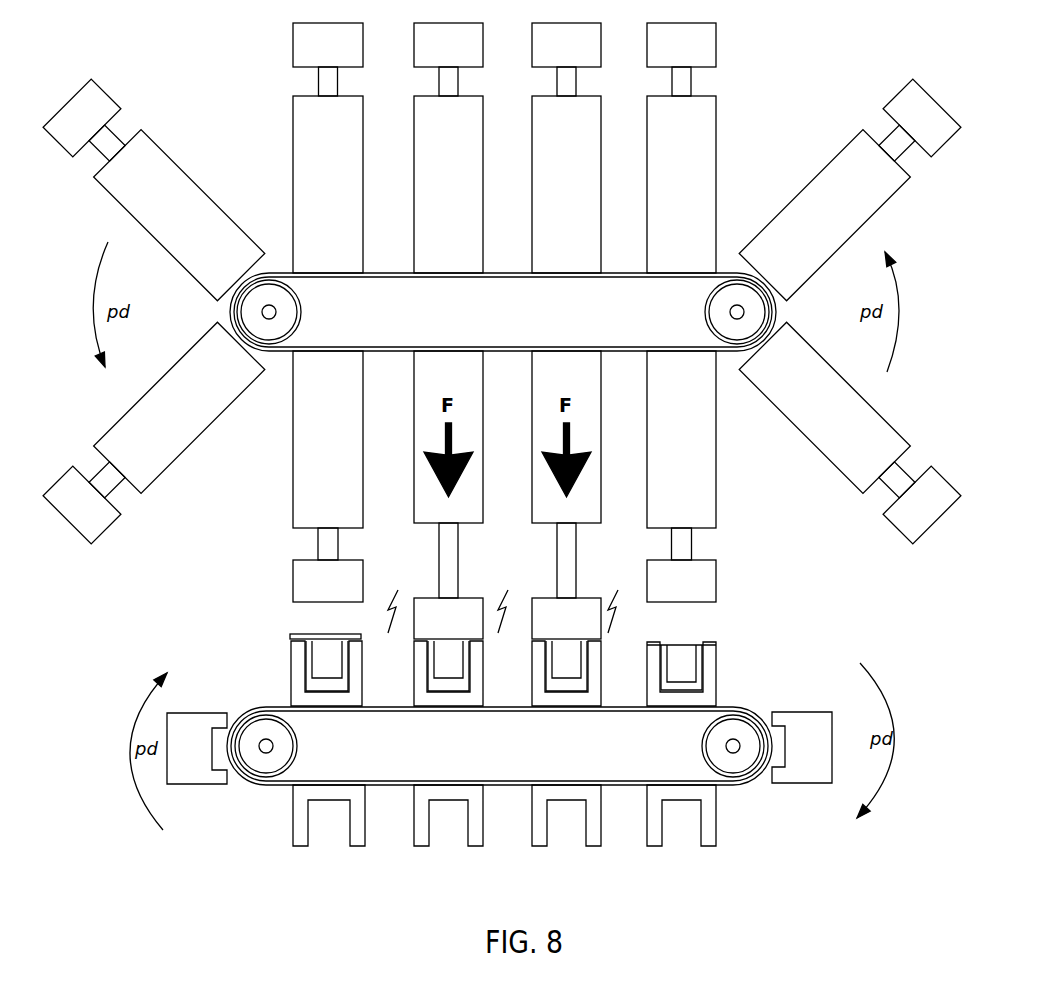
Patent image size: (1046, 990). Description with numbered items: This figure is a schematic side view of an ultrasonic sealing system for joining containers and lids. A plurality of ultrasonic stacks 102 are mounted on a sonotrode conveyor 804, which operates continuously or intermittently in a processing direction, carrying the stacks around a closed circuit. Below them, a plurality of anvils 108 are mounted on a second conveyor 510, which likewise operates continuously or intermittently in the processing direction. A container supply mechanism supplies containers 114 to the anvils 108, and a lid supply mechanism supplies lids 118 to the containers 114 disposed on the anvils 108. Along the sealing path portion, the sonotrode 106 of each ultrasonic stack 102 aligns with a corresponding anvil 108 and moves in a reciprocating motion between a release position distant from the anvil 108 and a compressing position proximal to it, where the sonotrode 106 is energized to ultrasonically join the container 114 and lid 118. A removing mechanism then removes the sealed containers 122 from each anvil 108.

The sonotrode conveyor 804 is at (275, 270).
The ultrasonic stack 102 is at (310, 445).
The sonotrode 106 is at (320, 583).
The lid 118 is at (332, 632).
The anvil 108 is at (297, 701).
The container 114 is at (320, 663).
The sealed container 122 is at (692, 658).
The conveyor 510 is at (394, 787).